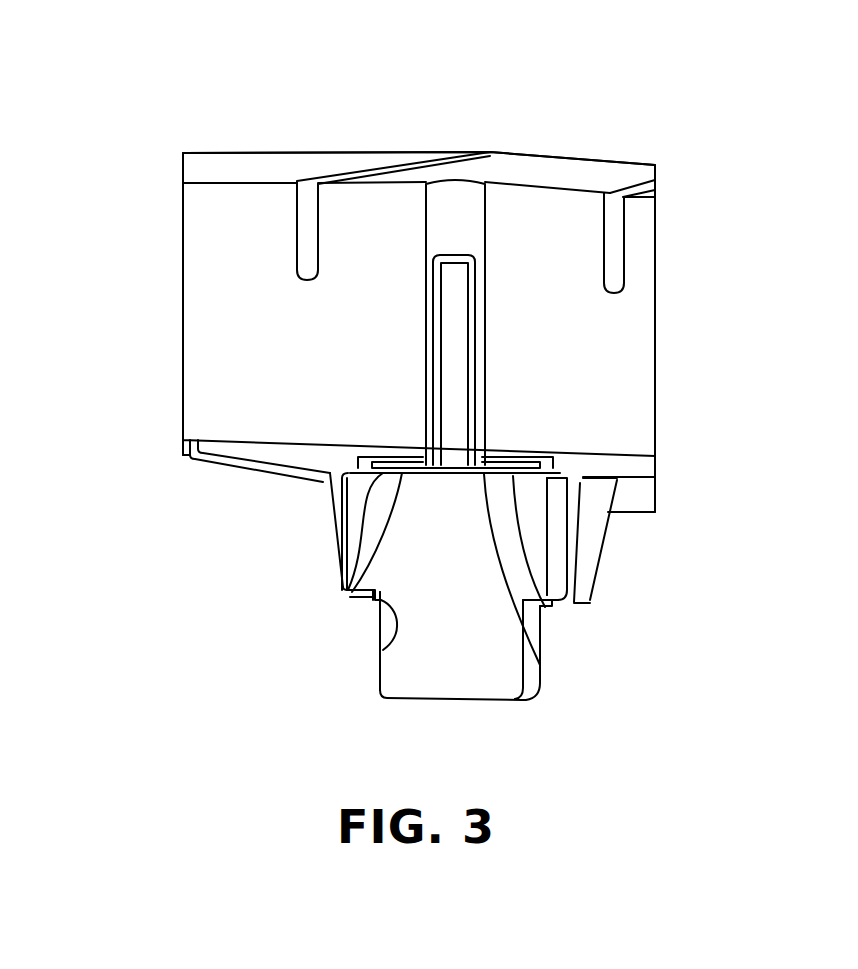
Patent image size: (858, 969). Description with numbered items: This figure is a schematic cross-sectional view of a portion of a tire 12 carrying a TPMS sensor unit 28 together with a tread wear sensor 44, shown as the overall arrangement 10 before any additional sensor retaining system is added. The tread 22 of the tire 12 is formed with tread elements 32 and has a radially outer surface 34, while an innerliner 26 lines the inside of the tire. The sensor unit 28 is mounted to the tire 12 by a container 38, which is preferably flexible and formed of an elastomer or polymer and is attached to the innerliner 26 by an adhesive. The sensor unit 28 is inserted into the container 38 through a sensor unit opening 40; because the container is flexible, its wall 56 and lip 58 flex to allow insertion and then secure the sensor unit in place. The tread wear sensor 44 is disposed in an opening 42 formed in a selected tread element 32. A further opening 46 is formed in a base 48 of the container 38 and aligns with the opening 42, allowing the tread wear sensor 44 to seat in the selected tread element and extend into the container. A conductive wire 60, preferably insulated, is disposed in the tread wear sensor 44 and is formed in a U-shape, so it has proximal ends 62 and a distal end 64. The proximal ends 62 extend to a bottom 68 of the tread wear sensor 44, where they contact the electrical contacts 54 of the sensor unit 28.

The sensor bracket assembly 10 is at (728, 221).
The tire 12 is at (645, 158).
The tread 22 is at (278, 152).
The innerliner 26 is at (185, 456).
The sensor unit 28 is at (381, 684).
The tread element 32 is at (566, 199).
The radially outer surface 34 is at (358, 182).
The container 38 is at (585, 458).
The sensor unit opening 40 is at (382, 649).
The opening 42 is at (483, 216).
The tread wear sensor 44 is at (486, 328).
The opening 46 is at (470, 440).
The base 48 is at (218, 448).
The electrical contacts 54 is at (368, 592).
The wall 56 is at (339, 494).
The lip 58 is at (372, 600).
The conductive wire 60 is at (473, 375).
The proximal ends 62 is at (355, 548).
The distal end 64 is at (455, 254).
The bottom 68 is at (553, 540).